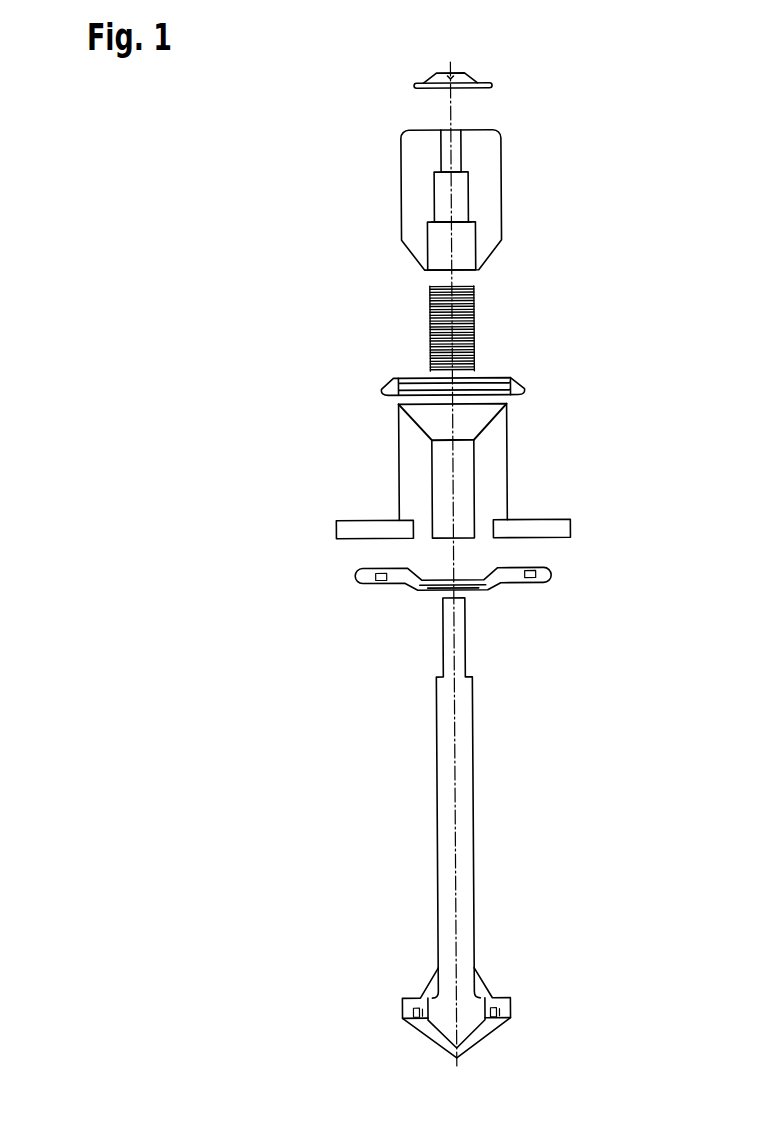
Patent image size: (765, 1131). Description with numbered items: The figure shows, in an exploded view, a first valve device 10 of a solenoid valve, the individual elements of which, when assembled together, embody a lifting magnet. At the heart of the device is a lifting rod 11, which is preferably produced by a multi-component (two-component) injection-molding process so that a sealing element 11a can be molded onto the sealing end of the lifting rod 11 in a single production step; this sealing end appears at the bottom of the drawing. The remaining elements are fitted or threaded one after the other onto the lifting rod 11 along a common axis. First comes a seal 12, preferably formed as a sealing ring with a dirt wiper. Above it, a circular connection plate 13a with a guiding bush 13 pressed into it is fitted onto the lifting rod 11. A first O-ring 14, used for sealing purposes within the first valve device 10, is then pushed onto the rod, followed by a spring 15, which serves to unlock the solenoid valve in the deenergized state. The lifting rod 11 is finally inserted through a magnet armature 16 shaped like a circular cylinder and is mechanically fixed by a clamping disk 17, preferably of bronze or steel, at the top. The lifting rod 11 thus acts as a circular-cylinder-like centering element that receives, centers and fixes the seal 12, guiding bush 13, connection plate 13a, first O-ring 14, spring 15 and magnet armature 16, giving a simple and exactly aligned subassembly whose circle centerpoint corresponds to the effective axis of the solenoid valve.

The first valve device 10 is at (257, 755).
The lifting rod 11 is at (490, 827).
The sealing element 11a is at (490, 1021).
The seal 12 is at (546, 572).
The guiding bush 13 is at (491, 472).
The connection plate 13a is at (562, 530).
The first O-ring 14 is at (523, 386).
The spring 15 is at (470, 323).
The magnet armature 16 is at (490, 197).
The clamping disk 17 is at (470, 73).